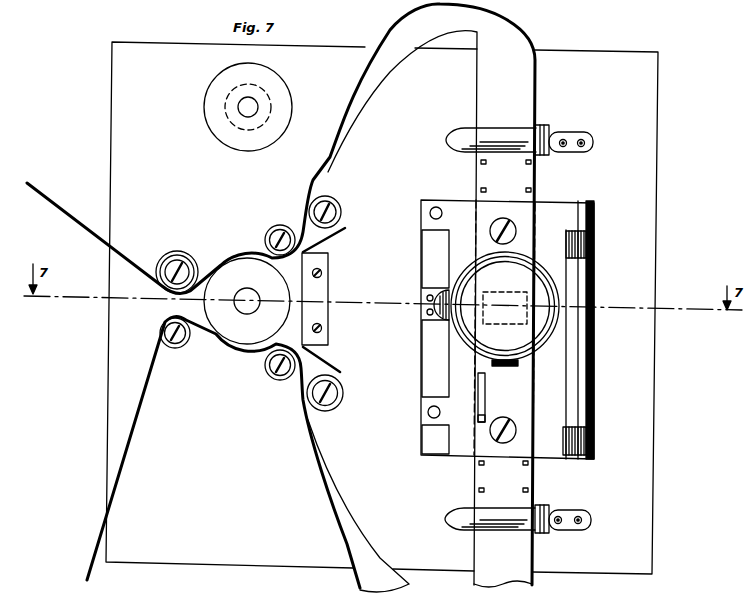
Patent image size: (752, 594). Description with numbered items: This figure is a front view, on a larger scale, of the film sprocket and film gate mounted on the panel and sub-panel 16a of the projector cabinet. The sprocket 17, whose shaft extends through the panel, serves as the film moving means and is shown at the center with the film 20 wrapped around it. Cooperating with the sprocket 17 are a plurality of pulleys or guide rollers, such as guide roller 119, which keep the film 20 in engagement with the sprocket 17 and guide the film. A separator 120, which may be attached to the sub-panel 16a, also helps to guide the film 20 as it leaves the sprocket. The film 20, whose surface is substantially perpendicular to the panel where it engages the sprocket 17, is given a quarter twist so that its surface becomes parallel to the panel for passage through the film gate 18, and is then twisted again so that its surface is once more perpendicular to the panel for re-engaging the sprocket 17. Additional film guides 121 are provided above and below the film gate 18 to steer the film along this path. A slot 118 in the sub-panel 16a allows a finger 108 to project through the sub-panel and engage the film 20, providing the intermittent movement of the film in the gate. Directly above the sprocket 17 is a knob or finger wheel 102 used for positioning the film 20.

The sub-panel 16a is at (111, 111).
The knob or finger wheel 102 is at (233, 68).
The film 20 is at (82, 225).
The guide roller 119 is at (173, 250).
The sprocket 17 is at (241, 333).
The separator 120 is at (337, 240).
The film gate 18 is at (553, 455).
The slot 118 is at (488, 391).
The finger 108 is at (488, 412).
The film guide 121 is at (553, 133).